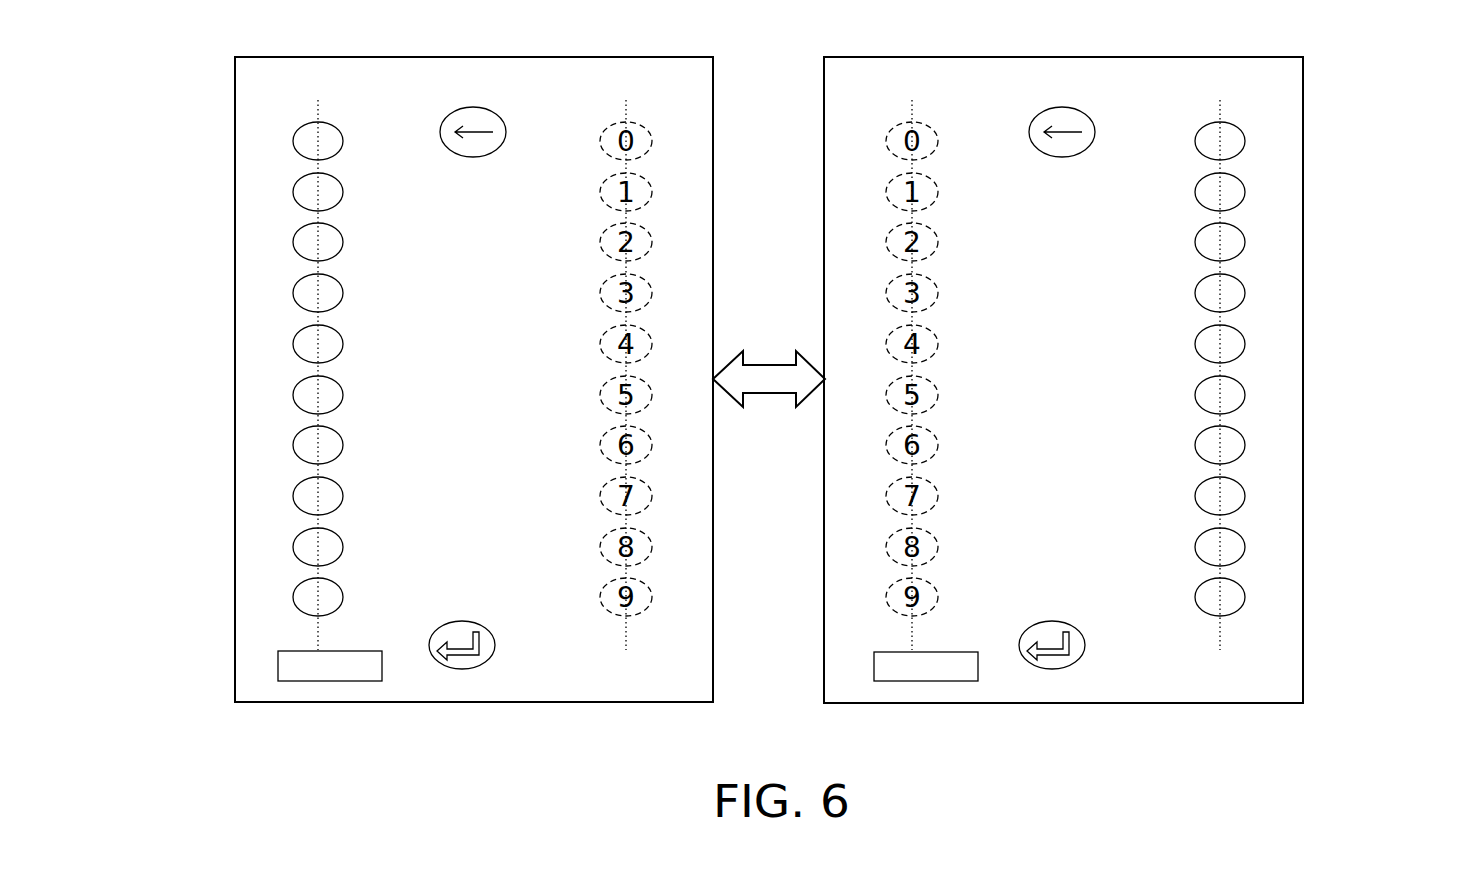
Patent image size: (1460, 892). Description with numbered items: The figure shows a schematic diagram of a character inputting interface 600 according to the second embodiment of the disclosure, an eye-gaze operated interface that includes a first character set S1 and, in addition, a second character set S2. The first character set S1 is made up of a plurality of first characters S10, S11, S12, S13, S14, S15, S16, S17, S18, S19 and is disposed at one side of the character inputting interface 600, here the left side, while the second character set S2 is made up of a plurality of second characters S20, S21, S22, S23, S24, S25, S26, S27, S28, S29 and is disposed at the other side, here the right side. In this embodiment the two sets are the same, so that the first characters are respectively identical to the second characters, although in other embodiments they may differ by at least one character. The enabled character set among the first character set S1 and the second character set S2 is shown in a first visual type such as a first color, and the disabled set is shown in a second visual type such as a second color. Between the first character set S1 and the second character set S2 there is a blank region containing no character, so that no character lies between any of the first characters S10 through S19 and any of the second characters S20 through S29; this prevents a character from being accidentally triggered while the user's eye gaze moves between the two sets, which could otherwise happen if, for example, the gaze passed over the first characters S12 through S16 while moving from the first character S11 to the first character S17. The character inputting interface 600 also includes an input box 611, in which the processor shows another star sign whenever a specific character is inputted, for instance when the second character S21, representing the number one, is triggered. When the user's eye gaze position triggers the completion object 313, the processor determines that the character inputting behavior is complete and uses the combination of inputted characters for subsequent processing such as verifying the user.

The character inputting interface 600 is at (1398, 762).
The first character set S1 is at (134, 108).
The second character set S2 is at (1400, 108).
The first character S10 is at (293, 148).
The first character S11 is at (293, 199).
The first character S12 is at (293, 249).
The first character S13 is at (293, 300).
The first character S14 is at (293, 351).
The first character S15 is at (293, 402).
The first character S16 is at (293, 452).
The first character S17 is at (293, 503).
The first character S18 is at (293, 554).
The first character S19 is at (293, 604).
The second character S20 is at (1245, 148).
The second character S21 is at (1245, 199).
The second character S22 is at (1245, 249).
The second character S23 is at (1245, 300).
The second character S24 is at (1245, 351).
The second character S25 is at (1245, 402).
The second character S26 is at (1245, 452).
The second character S27 is at (1245, 503).
The second character S28 is at (1245, 554).
The second character S29 is at (1245, 604).
The input box 611 is at (278, 663).
The completion object 313 is at (462, 669).